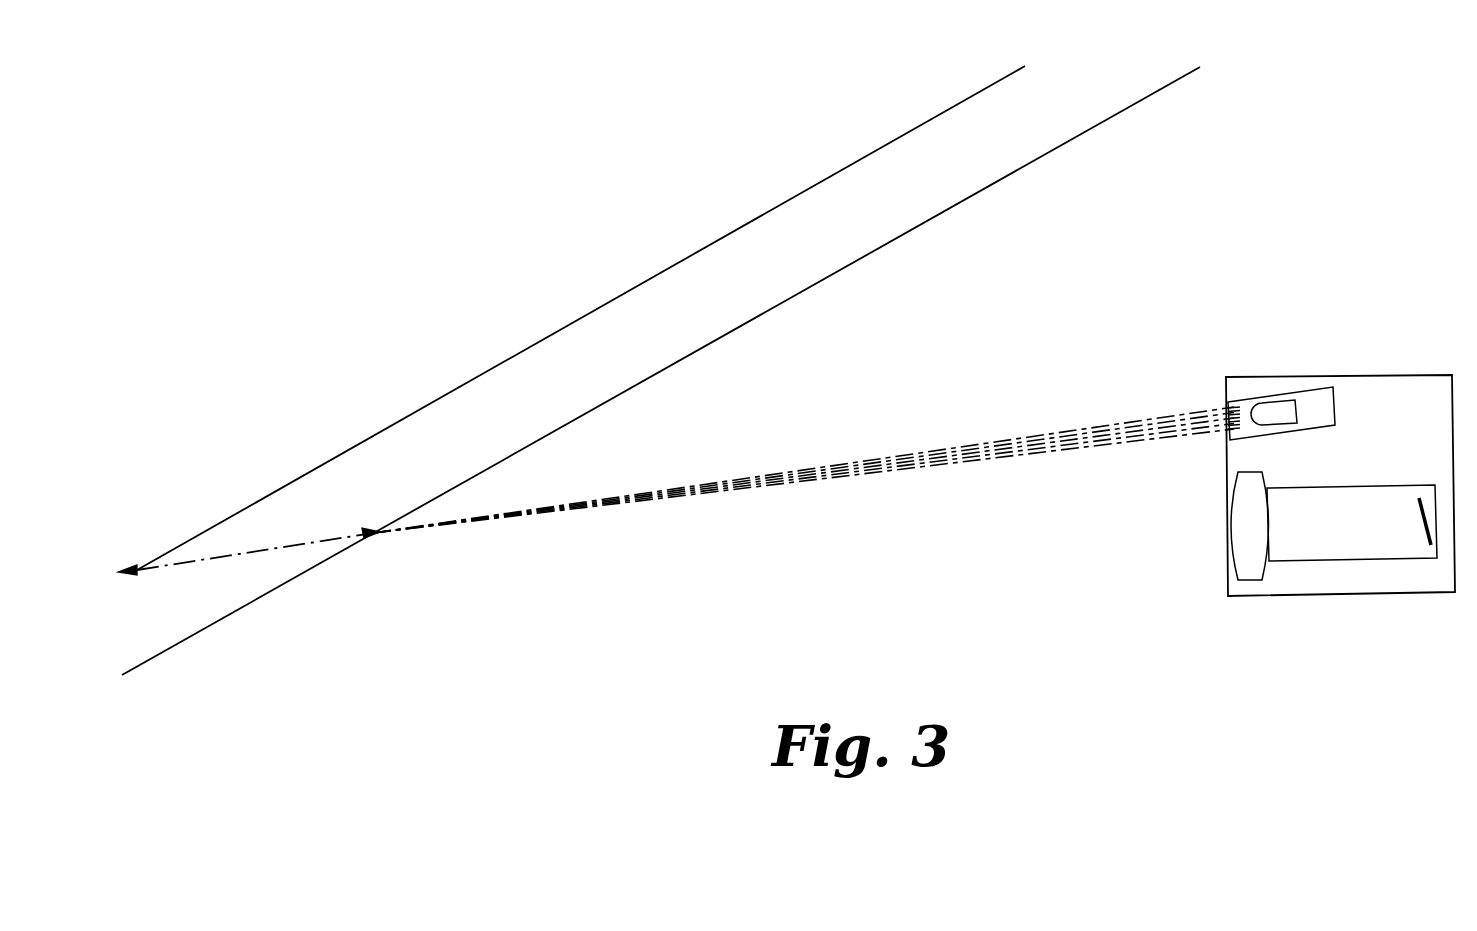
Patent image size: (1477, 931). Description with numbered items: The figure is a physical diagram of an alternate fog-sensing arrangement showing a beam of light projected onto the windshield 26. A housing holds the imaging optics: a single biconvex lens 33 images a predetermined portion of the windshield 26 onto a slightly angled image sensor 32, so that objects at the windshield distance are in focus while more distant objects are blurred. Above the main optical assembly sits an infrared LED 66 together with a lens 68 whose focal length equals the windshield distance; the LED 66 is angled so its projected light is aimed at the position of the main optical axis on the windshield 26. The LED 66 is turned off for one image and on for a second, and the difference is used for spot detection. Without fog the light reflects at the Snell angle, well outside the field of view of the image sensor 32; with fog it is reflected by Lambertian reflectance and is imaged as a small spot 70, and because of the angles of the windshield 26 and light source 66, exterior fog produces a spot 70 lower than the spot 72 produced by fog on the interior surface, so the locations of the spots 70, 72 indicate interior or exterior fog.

The windshield 26 is at (705, 243).
The image sensor 32 is at (1420, 523).
The biconvex lens 33 is at (1233, 570).
The infrared LED 66 is at (1283, 415).
The lens 68 is at (1227, 428).
The spot 70 is at (137, 570).
The spot 72 is at (373, 535).